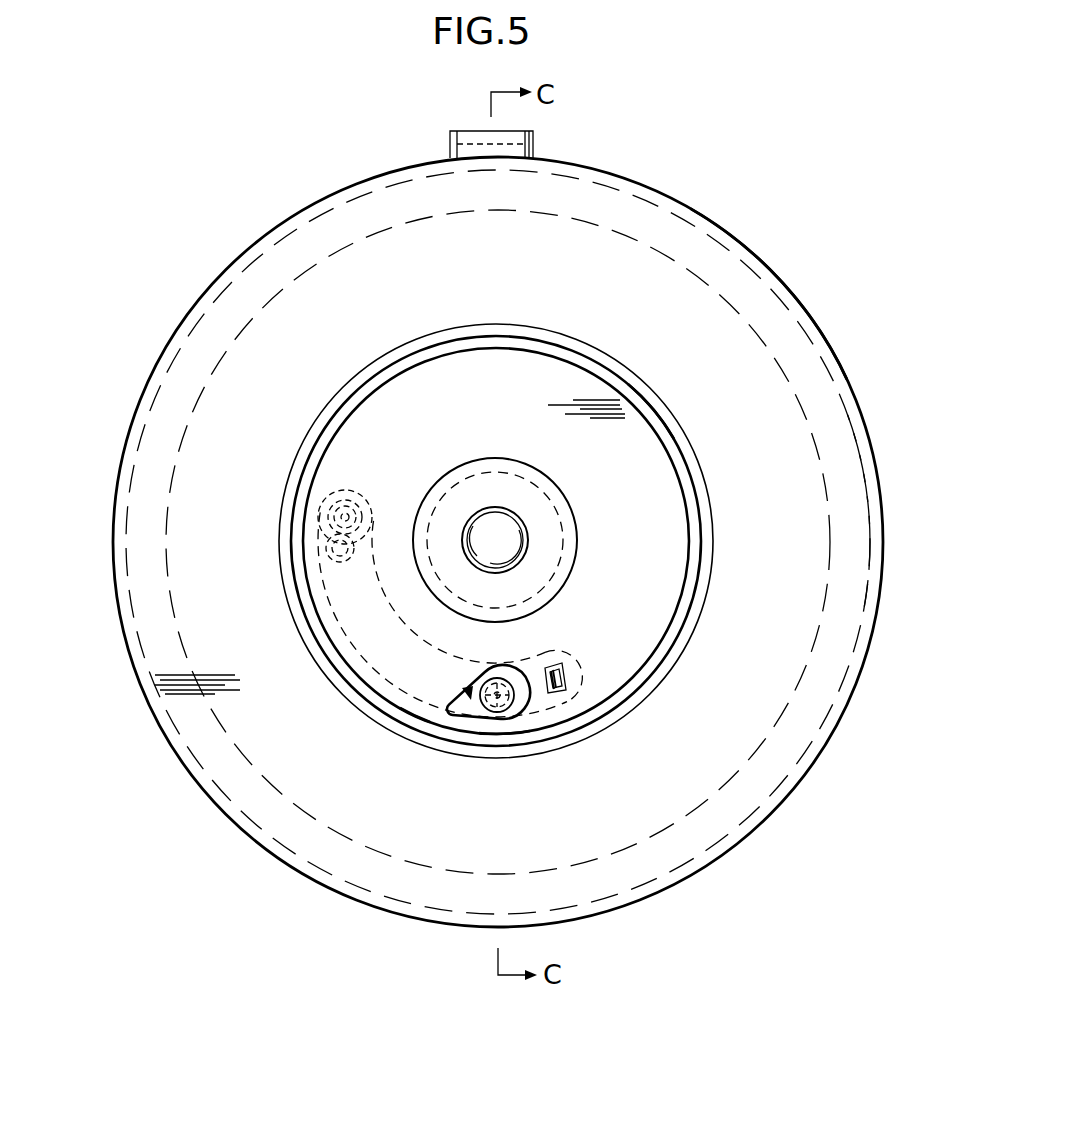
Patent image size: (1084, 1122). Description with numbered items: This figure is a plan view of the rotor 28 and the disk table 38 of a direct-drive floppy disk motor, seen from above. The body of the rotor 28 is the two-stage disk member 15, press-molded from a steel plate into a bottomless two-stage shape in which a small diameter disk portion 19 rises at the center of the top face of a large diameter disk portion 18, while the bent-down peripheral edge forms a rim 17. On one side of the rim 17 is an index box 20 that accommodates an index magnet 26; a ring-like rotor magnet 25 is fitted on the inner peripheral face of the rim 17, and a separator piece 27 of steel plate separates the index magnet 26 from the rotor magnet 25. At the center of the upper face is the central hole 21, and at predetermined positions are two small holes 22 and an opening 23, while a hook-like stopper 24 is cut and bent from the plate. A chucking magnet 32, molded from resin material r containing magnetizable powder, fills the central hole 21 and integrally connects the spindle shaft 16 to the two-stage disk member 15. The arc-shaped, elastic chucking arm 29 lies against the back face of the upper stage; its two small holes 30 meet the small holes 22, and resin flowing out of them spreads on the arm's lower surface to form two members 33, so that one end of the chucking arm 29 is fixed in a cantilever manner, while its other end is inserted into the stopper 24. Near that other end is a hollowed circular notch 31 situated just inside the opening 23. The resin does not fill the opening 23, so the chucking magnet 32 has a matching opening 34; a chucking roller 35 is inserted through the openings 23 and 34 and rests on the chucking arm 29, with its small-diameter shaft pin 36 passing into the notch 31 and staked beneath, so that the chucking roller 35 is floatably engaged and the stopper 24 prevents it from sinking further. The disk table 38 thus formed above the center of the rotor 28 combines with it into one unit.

The two-stage disk member 15 is at (752, 244).
The spindle shaft 16 is at (528, 539).
The rim 17 is at (812, 337).
The large diameter disk portion 18 is at (831, 383).
The small diameter disk portion 19 is at (692, 497).
The index box 20 is at (465, 132).
The central hole 21 is at (476, 480).
The small holes 22 is at (380, 480).
The opening 23 is at (487, 663).
The stopper 24 is at (566, 694).
The rotor magnet 25 is at (863, 459).
The index magnet 26 is at (450, 140).
The separator piece 27 is at (516, 156).
The rotor 28 is at (796, 290).
The chucking arm 29 is at (395, 700).
The small holes 30 is at (450, 586).
The notch 31 is at (497, 712).
The chucking magnet 32 is at (617, 390).
The members 33 is at (314, 526).
The opening 34 is at (476, 682).
The chucking roller 35 is at (479, 703).
The shaft pin 36 is at (514, 735).
The disk table 38 is at (592, 338).
The resin material r is at (647, 437).